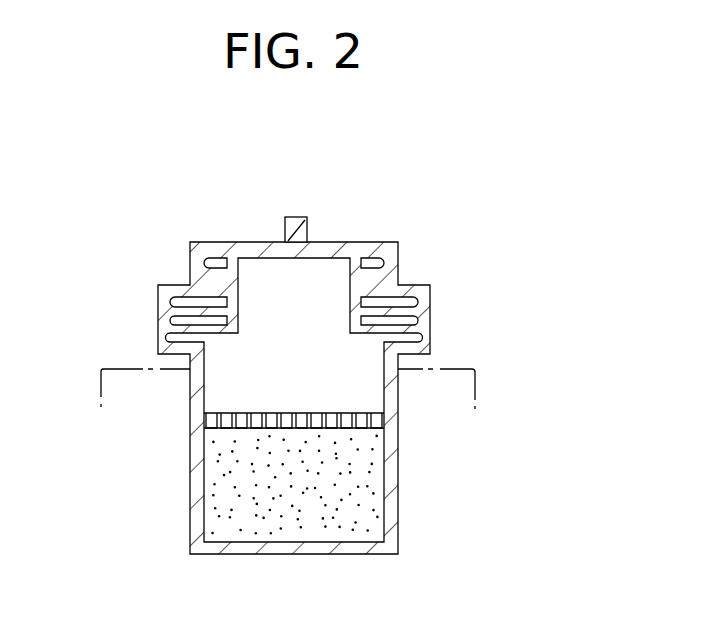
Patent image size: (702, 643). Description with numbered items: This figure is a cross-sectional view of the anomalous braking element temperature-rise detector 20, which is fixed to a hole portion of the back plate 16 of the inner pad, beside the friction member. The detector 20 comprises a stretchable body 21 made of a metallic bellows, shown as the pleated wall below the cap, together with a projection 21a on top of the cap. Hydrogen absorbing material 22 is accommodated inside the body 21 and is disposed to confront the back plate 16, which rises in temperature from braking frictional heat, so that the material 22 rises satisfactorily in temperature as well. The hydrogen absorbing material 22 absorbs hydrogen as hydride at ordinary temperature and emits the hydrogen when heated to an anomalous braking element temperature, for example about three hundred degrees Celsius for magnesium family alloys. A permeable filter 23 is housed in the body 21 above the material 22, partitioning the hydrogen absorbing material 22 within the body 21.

The back plate 16 is at (457, 369).
The anomalous braking element temperature-rise detector 20 is at (418, 231).
The stretchable body 21 is at (158, 286).
The projection 21a is at (295, 216).
The hydrogen absorbing material 22 is at (310, 523).
The filter 23 is at (233, 428).